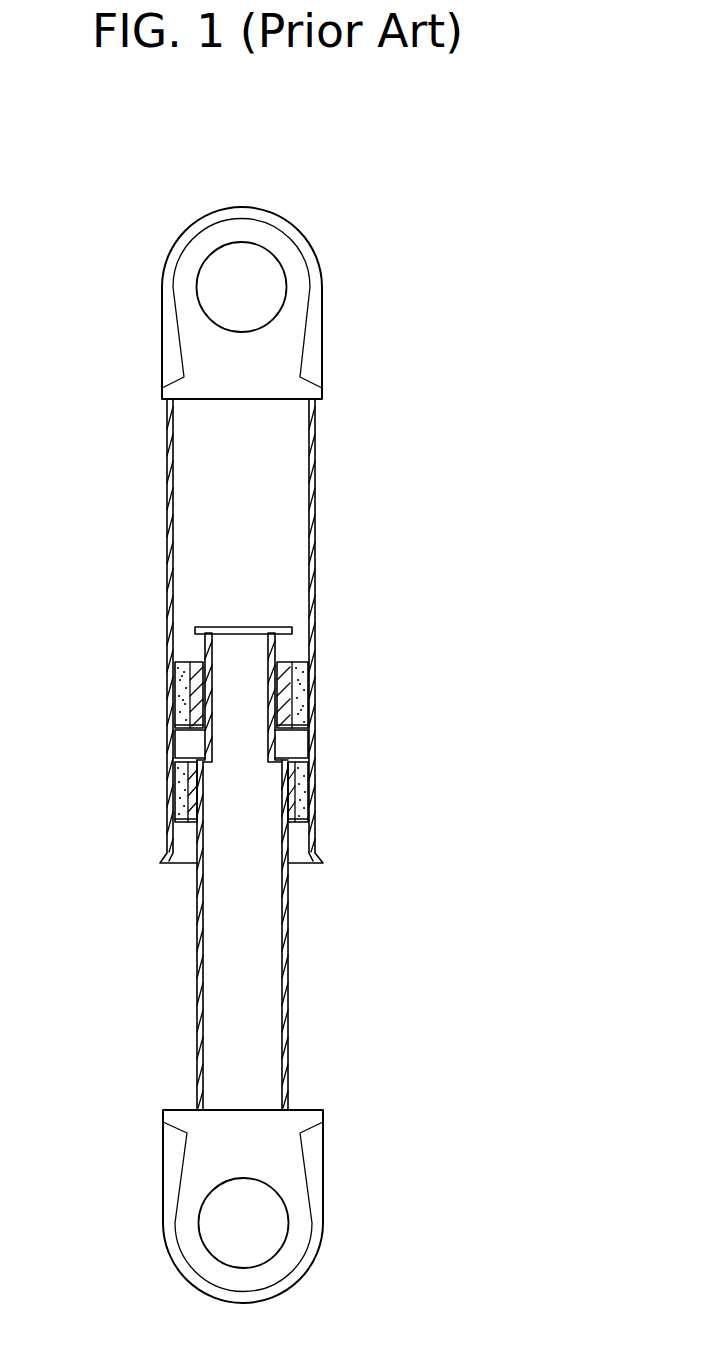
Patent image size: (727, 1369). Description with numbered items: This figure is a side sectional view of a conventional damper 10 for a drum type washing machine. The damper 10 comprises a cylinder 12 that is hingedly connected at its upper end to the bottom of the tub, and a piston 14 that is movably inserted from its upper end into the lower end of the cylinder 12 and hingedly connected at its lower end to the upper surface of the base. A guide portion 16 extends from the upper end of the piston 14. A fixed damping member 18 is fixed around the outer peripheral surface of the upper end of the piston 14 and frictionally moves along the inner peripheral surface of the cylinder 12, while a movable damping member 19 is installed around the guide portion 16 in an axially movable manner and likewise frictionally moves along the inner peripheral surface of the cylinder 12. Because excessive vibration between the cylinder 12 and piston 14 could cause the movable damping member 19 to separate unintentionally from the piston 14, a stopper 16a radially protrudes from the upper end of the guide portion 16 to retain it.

The damper 10 is at (357, 292).
The cylinder 12 is at (170, 636).
The piston 14 is at (200, 912).
The guide portion 16 is at (174, 748).
The stopper 16a is at (292, 628).
The fixed damping member 18 is at (178, 793).
The movable damping member 19 is at (172, 692).